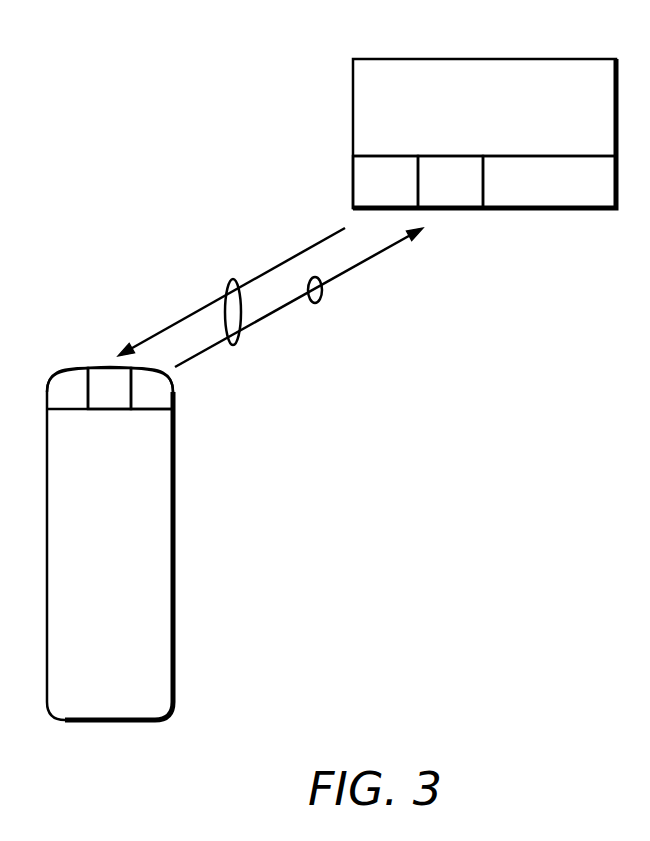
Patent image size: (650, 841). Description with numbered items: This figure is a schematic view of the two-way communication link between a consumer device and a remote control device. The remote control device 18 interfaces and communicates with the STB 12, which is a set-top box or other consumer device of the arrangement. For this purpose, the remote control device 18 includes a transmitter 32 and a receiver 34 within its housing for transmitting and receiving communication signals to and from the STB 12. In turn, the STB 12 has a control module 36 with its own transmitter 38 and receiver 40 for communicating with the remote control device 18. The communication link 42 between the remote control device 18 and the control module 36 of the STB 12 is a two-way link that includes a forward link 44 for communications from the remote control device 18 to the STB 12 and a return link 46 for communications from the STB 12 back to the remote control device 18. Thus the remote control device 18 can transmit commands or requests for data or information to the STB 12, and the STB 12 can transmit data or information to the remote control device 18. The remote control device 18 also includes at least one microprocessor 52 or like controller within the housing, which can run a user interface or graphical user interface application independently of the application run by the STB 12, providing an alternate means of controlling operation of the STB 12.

The STB 12 is at (571, 66).
The transmitter 38 is at (385, 158).
The receiver 40 is at (447, 158).
The control module 36 is at (536, 200).
The remote control device 18 is at (172, 545).
The microprocessor 52 is at (60, 377).
The receiver 34 is at (100, 372).
The transmitter 32 is at (175, 394).
The return link 46 is at (190, 312).
The two-way communication link 42 is at (235, 281).
The forward link 44 is at (318, 302).